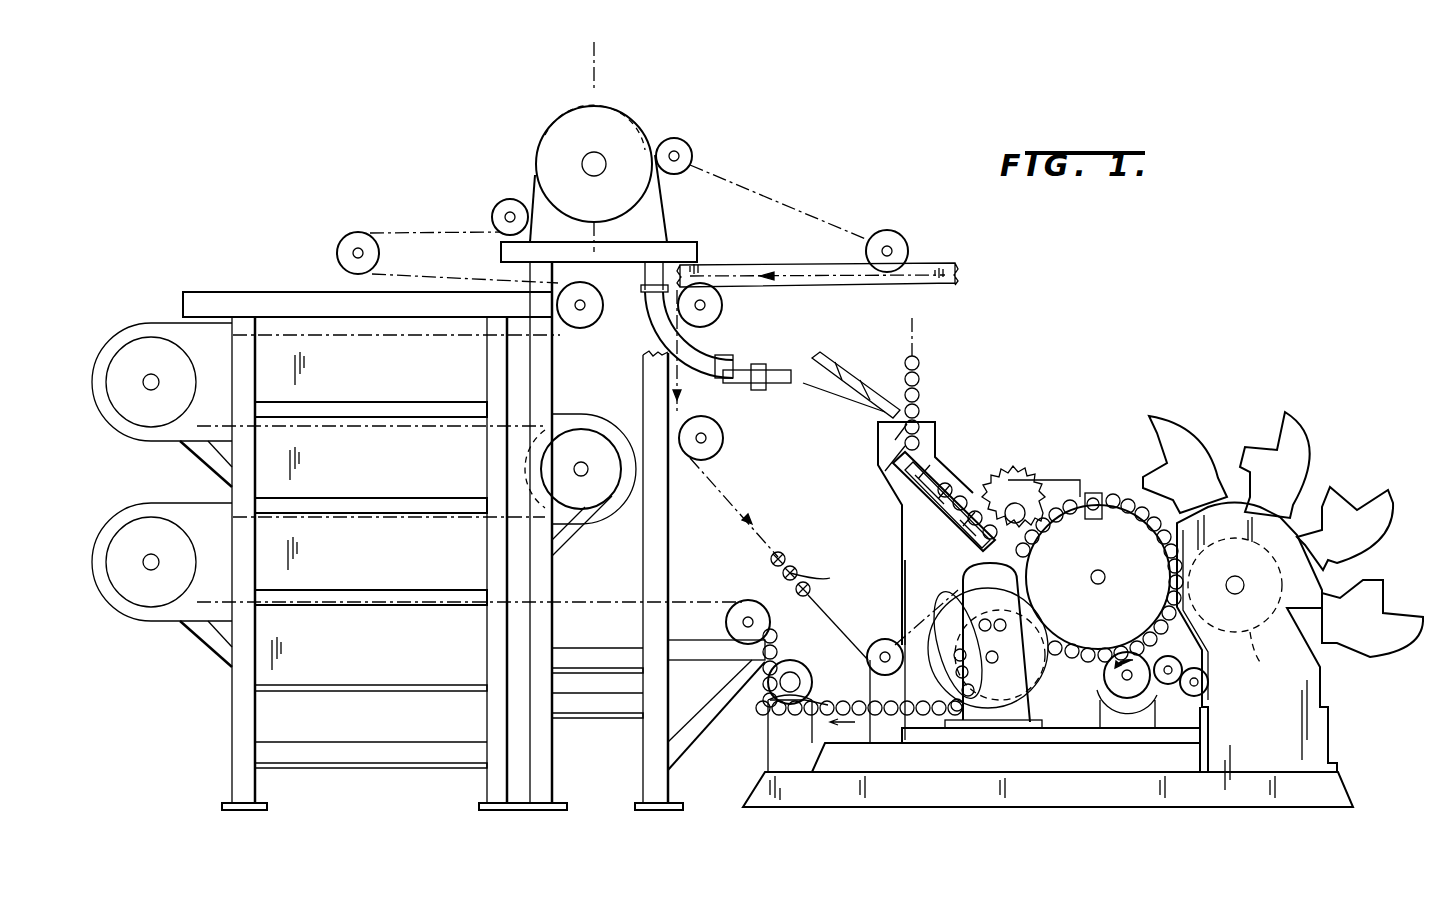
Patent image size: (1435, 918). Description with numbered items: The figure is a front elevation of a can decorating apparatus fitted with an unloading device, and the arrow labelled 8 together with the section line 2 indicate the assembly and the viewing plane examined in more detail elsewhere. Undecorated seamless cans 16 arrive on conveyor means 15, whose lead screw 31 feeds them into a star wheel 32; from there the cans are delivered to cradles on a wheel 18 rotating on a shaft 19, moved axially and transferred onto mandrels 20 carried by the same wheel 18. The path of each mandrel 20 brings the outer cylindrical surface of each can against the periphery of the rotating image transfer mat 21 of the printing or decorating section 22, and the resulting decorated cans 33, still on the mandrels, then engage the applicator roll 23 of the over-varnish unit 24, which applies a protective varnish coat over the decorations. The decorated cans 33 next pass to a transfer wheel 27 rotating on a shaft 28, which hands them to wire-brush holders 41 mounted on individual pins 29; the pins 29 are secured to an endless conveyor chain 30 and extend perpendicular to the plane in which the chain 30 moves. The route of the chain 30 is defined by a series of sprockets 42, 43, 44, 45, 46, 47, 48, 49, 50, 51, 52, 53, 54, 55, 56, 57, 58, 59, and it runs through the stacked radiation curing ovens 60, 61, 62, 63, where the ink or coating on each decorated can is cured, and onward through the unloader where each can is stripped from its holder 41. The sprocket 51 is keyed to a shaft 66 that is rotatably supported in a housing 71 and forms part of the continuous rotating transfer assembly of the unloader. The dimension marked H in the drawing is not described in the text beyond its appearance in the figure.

The web handling apparatus 8 is at (512, 128).
The section line 2 is at (612, 66).
The housing 71 is at (570, 120).
The shaft 66 is at (590, 170).
The sprocket 51 is at (625, 222).
The sprocket 52 is at (690, 150).
The sprocket 50 is at (513, 184).
The sprocket 49 is at (356, 242).
The sprocket 53 is at (896, 248).
The sprocket 54 is at (722, 310).
The sprocket 48 is at (572, 326).
The radiation curing oven 63 is at (385, 384).
The radiation curing oven 62 is at (385, 480).
The radiation curing oven 61 is at (385, 571).
The radiation curing oven 60 is at (385, 660).
The sprocket 47 is at (148, 396).
The sprocket 45 is at (148, 590).
The sprocket 46 is at (602, 482).
The undecorated seamless can 16 is at (920, 380).
The conveyor means 15 is at (938, 442).
The lead screw 31 is at (945, 470).
The star wheel 32 is at (1018, 495).
The wheel 18 is at (1122, 500).
The mandrel 20 is at (1105, 480).
The shaft 19 is at (1104, 572).
The decorated can 33 is at (1068, 660).
The image transfer mat 21 is at (1268, 648).
The printing or decorating section 22 is at (1218, 433).
The applicator roll 23 is at (1120, 698).
The over-varnish unit 24 is at (1166, 684).
The endless conveyor chain 30 is at (722, 506).
The holder 41 is at (785, 562).
The pin 29 is at (808, 590).
The sprocket 44 is at (745, 612).
The sprocket 43 is at (800, 670).
The sprocket 55 is at (900, 624).
The sprocket 56 is at (952, 589).
The sprocket 57 is at (998, 660).
The sprocket 42 is at (935, 686).
The transfer wheel 27 is at (1040, 698).
The sprocket 59 is at (985, 665).
The sprocket 58 is at (992, 665).
The shaft 28 is at (1003, 662).
The height H is at (768, 739).